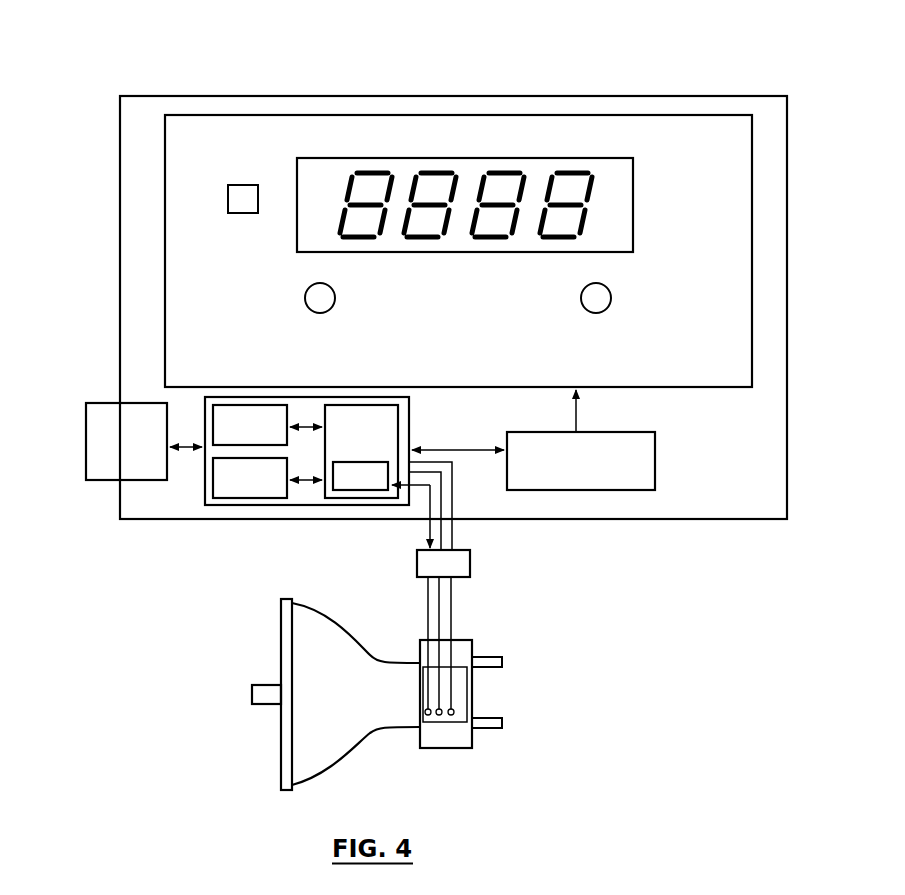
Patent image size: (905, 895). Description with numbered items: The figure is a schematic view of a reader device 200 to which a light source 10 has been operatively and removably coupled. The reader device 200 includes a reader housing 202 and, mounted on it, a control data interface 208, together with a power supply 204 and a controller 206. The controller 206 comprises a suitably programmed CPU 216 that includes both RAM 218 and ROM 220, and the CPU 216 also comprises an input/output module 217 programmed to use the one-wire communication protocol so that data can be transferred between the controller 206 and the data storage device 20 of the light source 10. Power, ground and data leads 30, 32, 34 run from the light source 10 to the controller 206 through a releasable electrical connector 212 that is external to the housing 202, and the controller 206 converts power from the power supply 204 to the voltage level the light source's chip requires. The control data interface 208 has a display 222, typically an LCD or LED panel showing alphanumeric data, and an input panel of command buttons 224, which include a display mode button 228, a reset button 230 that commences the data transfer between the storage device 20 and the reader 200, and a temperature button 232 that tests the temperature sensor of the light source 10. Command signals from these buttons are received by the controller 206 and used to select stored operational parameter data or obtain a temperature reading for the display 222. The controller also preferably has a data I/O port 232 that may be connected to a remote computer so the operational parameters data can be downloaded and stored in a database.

The reader device 200 is at (467, 46).
The reader housing 202 is at (703, 92).
The power supply 204 is at (598, 490).
The controller 206 is at (197, 493).
The control data interface 208 is at (343, 112).
The releasable electrical connector 212 is at (470, 558).
The CPU 216 is at (321, 486).
The input/output module 217 is at (357, 491).
The RAM 218 is at (213, 416).
The ROM 220 is at (233, 498).
The display 222 is at (563, 158).
The input panel of command buttons 224 is at (660, 299).
The display mode button 228 is at (243, 185).
The reset button 230 is at (306, 294).
The temperature button and data I/O port 232 is at (608, 307).
The light source 10 is at (279, 612).
The data storage device 20 is at (415, 706).
The power lead 30 is at (427, 591).
The ground lead 32 is at (438, 612).
The data lead 34 is at (452, 612).